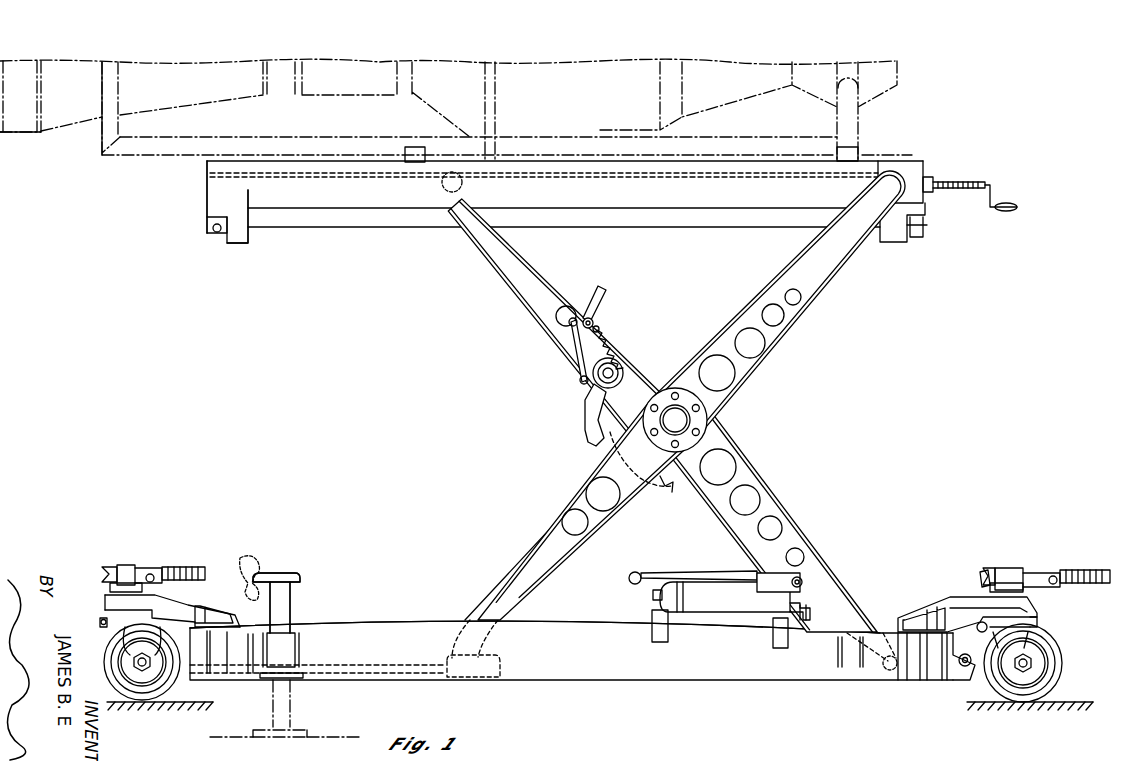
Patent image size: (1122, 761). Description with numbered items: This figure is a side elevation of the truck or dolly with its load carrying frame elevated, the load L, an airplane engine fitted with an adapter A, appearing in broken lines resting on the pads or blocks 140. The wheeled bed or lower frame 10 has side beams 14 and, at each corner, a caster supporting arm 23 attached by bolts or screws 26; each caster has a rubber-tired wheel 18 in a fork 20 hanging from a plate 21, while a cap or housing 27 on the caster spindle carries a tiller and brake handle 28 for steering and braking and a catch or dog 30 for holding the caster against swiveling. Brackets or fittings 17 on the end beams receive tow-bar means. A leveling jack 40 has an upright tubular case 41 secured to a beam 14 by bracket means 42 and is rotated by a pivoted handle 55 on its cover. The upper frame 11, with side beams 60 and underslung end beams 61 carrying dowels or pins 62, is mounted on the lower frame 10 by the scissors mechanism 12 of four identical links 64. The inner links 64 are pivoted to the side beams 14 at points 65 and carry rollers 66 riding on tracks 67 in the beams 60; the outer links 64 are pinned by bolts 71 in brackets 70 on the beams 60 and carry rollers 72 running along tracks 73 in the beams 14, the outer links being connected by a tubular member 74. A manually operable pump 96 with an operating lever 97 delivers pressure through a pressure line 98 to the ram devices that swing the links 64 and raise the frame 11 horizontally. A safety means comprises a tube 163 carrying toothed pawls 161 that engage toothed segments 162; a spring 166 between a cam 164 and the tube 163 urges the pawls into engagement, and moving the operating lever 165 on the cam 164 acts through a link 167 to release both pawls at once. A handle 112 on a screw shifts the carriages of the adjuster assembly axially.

The load L is at (577, 100).
The adapter A is at (172, 150).
The lower frame 10 is at (388, 620).
The upper frame 11 is at (382, 215).
The scissors mechanism 12 is at (781, 359).
The side beam 14 is at (591, 655).
The bracket or fitting 17 is at (966, 668).
The rubber-tired wheel 18 is at (105, 645).
The fork 20 is at (150, 672).
The plate 21 is at (1035, 623).
The caster supporting arm 23 is at (968, 607).
The bolt or screw 26 is at (205, 607).
The cap or housing 27 is at (150, 565).
The tiller and brake handle 28 is at (180, 567).
The catch or dog 30 is at (985, 571).
The leveling jack 40 is at (300, 617).
The tubular case 41 is at (287, 600).
The bracket means 42 is at (296, 647).
The pivoted handle 55 is at (247, 577).
The side beam 60 is at (632, 191).
The end beam 61 is at (917, 213).
The dowel or pin 62 is at (915, 237).
The link 64 is at (742, 432).
The pivot 65 is at (885, 668).
The roller 66 is at (464, 182).
The track 67 is at (345, 178).
The bracket 70 is at (905, 180).
The bolt or pin 71 is at (877, 182).
The roller 72 is at (500, 657).
The track 73 is at (365, 668).
The tubular member 74 is at (690, 410).
The pump 96 is at (722, 607).
The operating lever or handle 97 is at (698, 573).
The pressure line 98 is at (818, 621).
The handle 112 is at (993, 205).
The pad or block 140 is at (417, 147).
The pawl or dog 161 is at (587, 407).
The toothed segment 162 is at (640, 505).
The shaft or tube 163 is at (622, 370).
The cam 164 is at (595, 321).
The operating lever 165 is at (603, 289).
The spring 166 is at (625, 352).
The link 167 is at (570, 358).